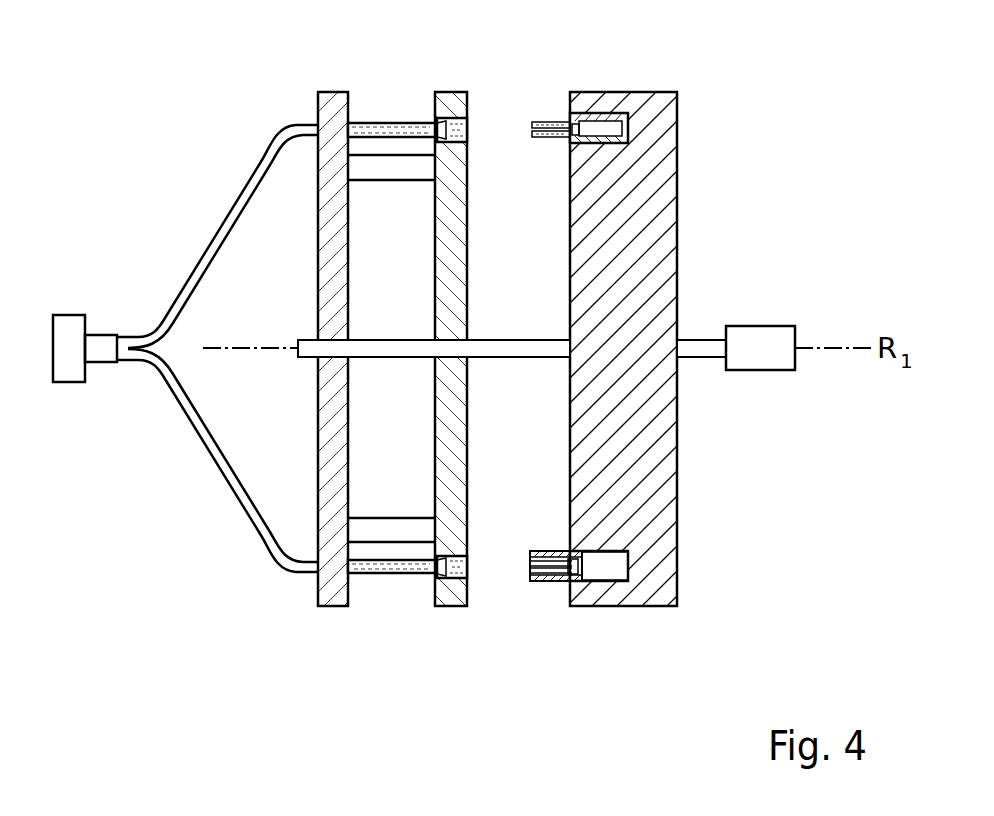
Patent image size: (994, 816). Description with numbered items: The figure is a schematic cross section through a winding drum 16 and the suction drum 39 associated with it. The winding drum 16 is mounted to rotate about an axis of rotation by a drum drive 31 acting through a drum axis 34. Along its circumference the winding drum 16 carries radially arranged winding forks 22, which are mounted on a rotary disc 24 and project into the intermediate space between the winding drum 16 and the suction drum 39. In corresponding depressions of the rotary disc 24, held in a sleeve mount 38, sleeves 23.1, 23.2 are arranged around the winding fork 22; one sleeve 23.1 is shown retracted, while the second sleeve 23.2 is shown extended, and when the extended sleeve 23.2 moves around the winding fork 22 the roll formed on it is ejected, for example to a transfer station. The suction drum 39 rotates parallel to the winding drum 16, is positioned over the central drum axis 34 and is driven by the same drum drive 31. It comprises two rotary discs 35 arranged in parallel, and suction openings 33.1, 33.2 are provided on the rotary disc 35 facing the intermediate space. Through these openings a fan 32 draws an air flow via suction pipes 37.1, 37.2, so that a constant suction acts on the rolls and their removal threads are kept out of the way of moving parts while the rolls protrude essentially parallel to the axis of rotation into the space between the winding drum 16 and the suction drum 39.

The winding drum 16 is at (628, 363).
The winding fork 22 is at (545, 122).
The sleeve 23.1 is at (590, 147).
The sleeve 23.2 is at (547, 552).
The rotary disc 24 is at (628, 178).
The drum drive 31 is at (763, 340).
The fan 32 is at (68, 347).
The suction opening 33.1 is at (463, 135).
The suction opening 33.2 is at (465, 575).
The drum axis 34 is at (382, 348).
The rotary discs of the suction drum 35 is at (455, 218).
The suction pipe 37.1 is at (383, 122).
The suction pipe 37.2 is at (395, 575).
The sleeve mount 38 is at (628, 132).
The suction drum 39 is at (389, 358).